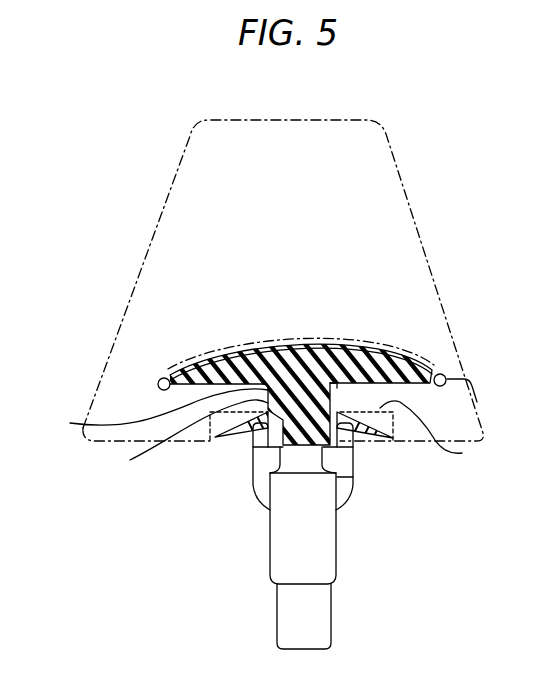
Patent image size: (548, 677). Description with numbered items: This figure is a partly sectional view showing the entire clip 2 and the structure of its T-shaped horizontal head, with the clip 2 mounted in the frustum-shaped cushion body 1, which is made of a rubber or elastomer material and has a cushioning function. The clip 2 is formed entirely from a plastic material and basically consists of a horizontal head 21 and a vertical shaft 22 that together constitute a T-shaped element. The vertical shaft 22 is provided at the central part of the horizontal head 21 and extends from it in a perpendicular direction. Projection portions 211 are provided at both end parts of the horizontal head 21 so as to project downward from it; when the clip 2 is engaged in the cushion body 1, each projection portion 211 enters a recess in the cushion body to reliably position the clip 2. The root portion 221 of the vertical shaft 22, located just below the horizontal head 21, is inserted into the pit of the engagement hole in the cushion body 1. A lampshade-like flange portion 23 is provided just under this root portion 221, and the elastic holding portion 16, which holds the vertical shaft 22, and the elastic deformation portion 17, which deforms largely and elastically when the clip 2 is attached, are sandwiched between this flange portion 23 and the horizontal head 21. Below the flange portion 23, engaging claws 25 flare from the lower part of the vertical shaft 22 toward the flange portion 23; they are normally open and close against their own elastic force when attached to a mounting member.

The cushion body 1 is at (405, 183).
The clip 2 is at (229, 489).
The horizontal head 21 is at (414, 368).
The projection portion 211 is at (157, 379).
The root portion 221 is at (239, 435).
The elastic holding portion 16 is at (156, 424).
The elastic deformation portion 17 is at (412, 422).
The flange portion 23 is at (373, 442).
The engaging claws 25 is at (280, 540).
The vertical shaft 22 is at (320, 625).